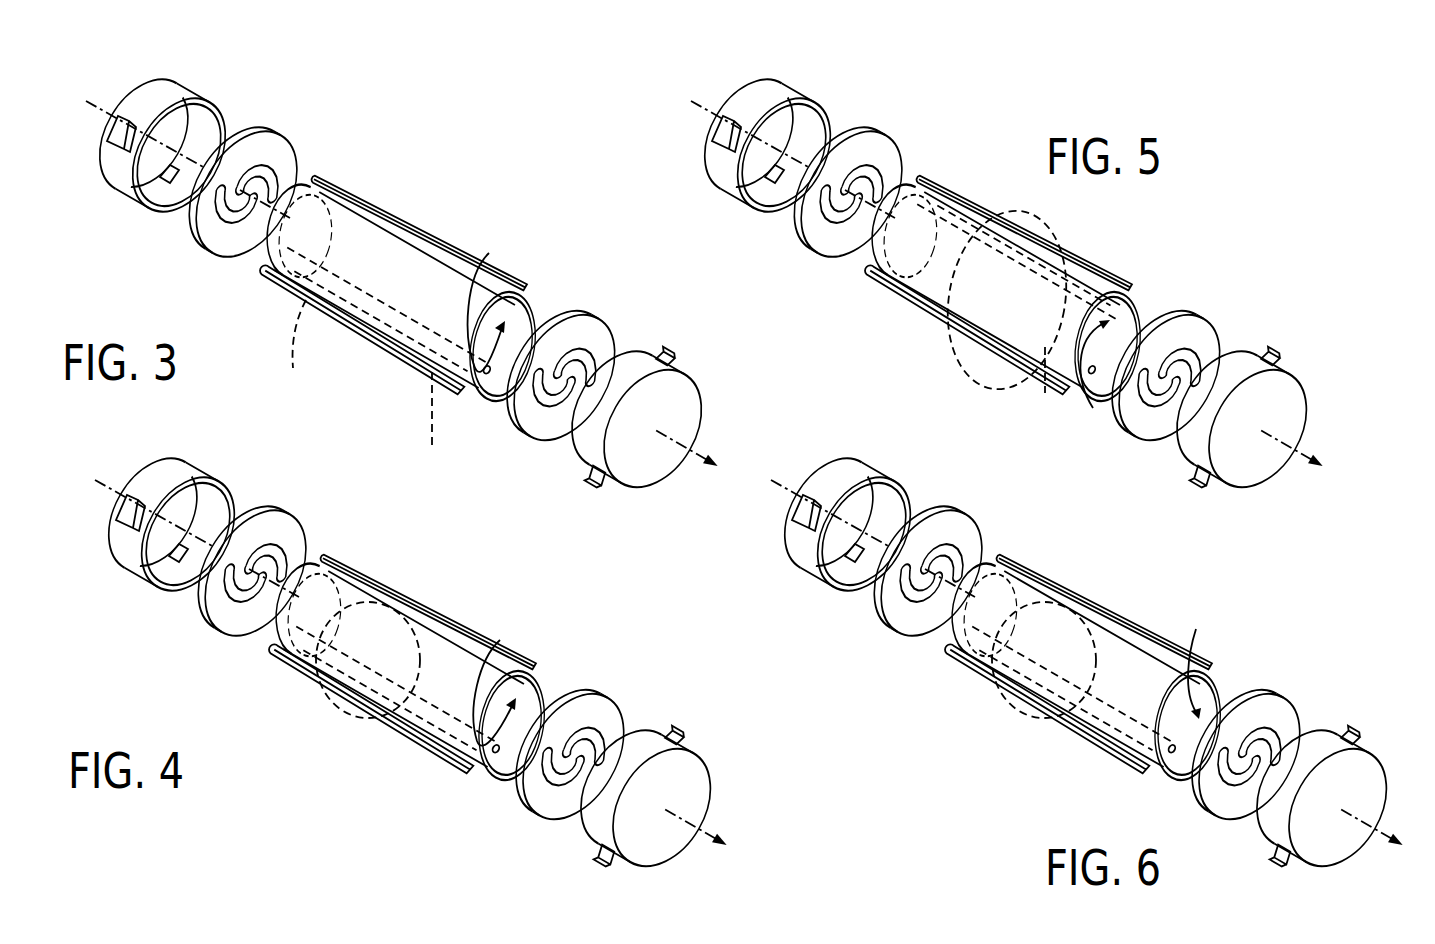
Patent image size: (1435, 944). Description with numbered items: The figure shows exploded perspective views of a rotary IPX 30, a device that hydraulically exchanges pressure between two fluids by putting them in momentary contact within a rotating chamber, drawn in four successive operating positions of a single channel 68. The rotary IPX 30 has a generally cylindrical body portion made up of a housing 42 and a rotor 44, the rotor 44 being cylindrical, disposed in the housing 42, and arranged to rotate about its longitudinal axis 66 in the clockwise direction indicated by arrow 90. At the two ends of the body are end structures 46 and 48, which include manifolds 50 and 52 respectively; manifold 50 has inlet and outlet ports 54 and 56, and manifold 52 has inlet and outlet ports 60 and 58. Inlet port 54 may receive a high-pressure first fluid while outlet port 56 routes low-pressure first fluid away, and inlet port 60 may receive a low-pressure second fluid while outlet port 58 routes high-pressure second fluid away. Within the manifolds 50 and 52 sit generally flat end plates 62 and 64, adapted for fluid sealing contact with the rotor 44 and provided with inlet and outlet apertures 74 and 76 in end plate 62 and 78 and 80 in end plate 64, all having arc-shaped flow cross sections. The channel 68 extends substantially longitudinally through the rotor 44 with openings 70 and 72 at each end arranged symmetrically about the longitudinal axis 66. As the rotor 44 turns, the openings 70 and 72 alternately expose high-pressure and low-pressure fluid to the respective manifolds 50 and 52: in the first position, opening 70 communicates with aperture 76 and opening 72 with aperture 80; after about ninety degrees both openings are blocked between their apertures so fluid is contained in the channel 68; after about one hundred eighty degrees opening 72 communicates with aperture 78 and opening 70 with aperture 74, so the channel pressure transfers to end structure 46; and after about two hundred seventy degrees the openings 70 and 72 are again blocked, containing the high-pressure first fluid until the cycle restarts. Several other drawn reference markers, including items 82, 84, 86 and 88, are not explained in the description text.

In FIG. 3, the rotary IPX 30 is at (254, 334).
In FIG. 4, the rotary IPX 30 is at (413, 675).
In FIG. 5, the rotary IPX 30 is at (1008, 294).
In FIG. 6, the rotary IPX 30 is at (1089, 675).
In FIG. 3, the housing 42 is at (275, 307).
In FIG. 4, the housing 42 is at (411, 671).
In FIG. 5, the housing 42 is at (1007, 311).
In FIG. 6, the housing 42 is at (1087, 671).
In FIG. 3, the rotor 44 is at (360, 202).
In FIG. 4, the rotor 44 is at (427, 612).
In FIG. 5, the rotor 44 is at (1023, 233).
In FIG. 6, the rotor 44 is at (1103, 612).
In FIG. 3, the end structure 46 is at (405, 265).
In FIG. 4, the end structure 46 is at (411, 668).
In FIG. 5, the end structure 46 is at (1007, 289).
In FIG. 6, the end structure 46 is at (1087, 668).
In FIG. 3, the end structure 48 is at (698, 330).
In FIG. 4, the end structure 48 is at (626, 768).
In FIG. 5, the end structure 48 is at (1222, 386).
In FIG. 6, the end structure 48 is at (1302, 768).
In FIG. 3, the manifold 50 is at (97, 203).
In FIG. 4, the manifold 50 is at (209, 569).
In FIG. 5, the manifold 50 is at (802, 184).
In FIG. 6, the manifold 50 is at (884, 569).
In FIG. 3, the manifold 52 is at (687, 401).
In FIG. 4, the manifold 52 is at (659, 808).
In FIG. 5, the manifold 52 is at (1255, 427).
In FIG. 6, the manifold 52 is at (1335, 808).
In FIG. 3, the inlet port 54 is at (192, 93).
In FIG. 4, the inlet port 54 is at (160, 533).
In FIG. 5, the inlet port 54 is at (757, 153).
In FIG. 6, the inlet port 54 is at (836, 533).
In FIG. 3, the outlet port 56 is at (673, 357).
In FIG. 4, the outlet port 56 is at (664, 723).
In FIG. 5, the outlet port 56 is at (1262, 343).
In FIG. 6, the outlet port 56 is at (1342, 723).
In FIG. 3, the outlet port 58 is at (582, 485).
In FIG. 4, the outlet port 58 is at (597, 880).
In FIG. 5, the outlet port 58 is at (1192, 500).
In FIG. 6, the outlet port 58 is at (1274, 880).
In FIG. 3, the inlet port 60 is at (112, 127).
In FIG. 4, the inlet port 60 is at (106, 507).
In FIG. 5, the inlet port 60 is at (702, 130).
In FIG. 6, the inlet port 60 is at (782, 507).
In FIG. 3, the end plate 62 is at (165, 182).
In FIG. 4, the end plate 62 is at (173, 587).
In FIG. 5, the end plate 62 is at (767, 209).
In FIG. 6, the end plate 62 is at (848, 587).
In FIG. 3, the end plate 64 is at (597, 332).
In FIG. 4, the end plate 64 is at (569, 761).
In FIG. 5, the end plate 64 is at (1165, 381).
In FIG. 6, the end plate 64 is at (1245, 761).
In FIG. 3, the longitudinal axis 66 is at (283, 152).
In FIG. 4, the longitudinal axis 66 is at (239, 574).
In FIG. 5, the longitudinal axis 66 is at (830, 195).
In FIG. 6, the longitudinal axis 66 is at (914, 574).
In FIG. 3, the channel 68 is at (96, 108).
In FIG. 4, the channel 68 is at (154, 491).
In FIG. 5, the channel 68 is at (750, 111).
In FIG. 6, the channel 68 is at (830, 491).
In FIG. 3, the opening 70 is at (338, 315).
In FIG. 4, the opening 70 is at (371, 672).
In FIG. 5, the opening 70 is at (966, 329).
In FIG. 6, the opening 70 is at (1046, 672).
In FIG. 3, the opening 72 is at (487, 380).
In FIG. 4, the opening 72 is at (492, 779).
In FIG. 5, the opening 72 is at (1112, 304).
In FIG. 6, the opening 72 is at (1168, 779).
In FIG. 3, the inlet aperture 74 is at (301, 238).
In FIG. 4, the inlet aperture 74 is at (331, 585).
In FIG. 5, the inlet aperture 74 is at (911, 236).
In FIG. 6, the inlet aperture 74 is at (1007, 585).
In FIG. 3, the outlet aperture 76 is at (567, 353).
In FIG. 4, the outlet aperture 76 is at (587, 716).
In FIG. 5, the outlet aperture 76 is at (1183, 340).
In FIG. 6, the outlet aperture 76 is at (1263, 716).
In FIG. 3, the inlet aperture 78 is at (542, 398).
In FIG. 4, the inlet aperture 78 is at (557, 801).
In FIG. 5, the inlet aperture 78 is at (1152, 418).
In FIG. 6, the inlet aperture 78 is at (1234, 801).
In FIG. 3, the outlet aperture 80 is at (253, 167).
In FIG. 4, the outlet aperture 80 is at (273, 534).
In FIG. 5, the outlet aperture 80 is at (868, 155).
In FIG. 6, the outlet aperture 80 is at (949, 534).
In FIG. 3, the lower cam slot 82 is at (205, 240).
In FIG. 4, the lower cam slot 82 is at (198, 613).
In FIG. 5, the lower cam slot 82 is at (792, 234).
In FIG. 6, the lower cam slot 82 is at (874, 613).
In FIG. 3, the rotation arrow 84 is at (497, 303).
In FIG. 4, the rotation arrow 84 is at (494, 678).
In FIG. 5, the rotation arrow 84 is at (1095, 378).
In FIG. 6, the rotation arrow 84 is at (1196, 660).
In FIG. 3, the hidden cavity 86 is at (293, 349).
In FIG. 4, the hidden cavity 86 is at (368, 671).
In FIG. 5, the hidden cavity 86 is at (1006, 299).
In FIG. 6, the hidden cavity 86 is at (1044, 671).
In FIG. 3, the hidden line 88 is at (432, 424).
In FIG. 5, the hidden line 88 is at (1050, 383).
In FIG. 3, the arrow 90 is at (402, 299).
In FIG. 4, the arrow 90 is at (392, 692).
In FIG. 5, the arrow 90 is at (1019, 264).
In FIG. 6, the arrow 90 is at (1068, 692).